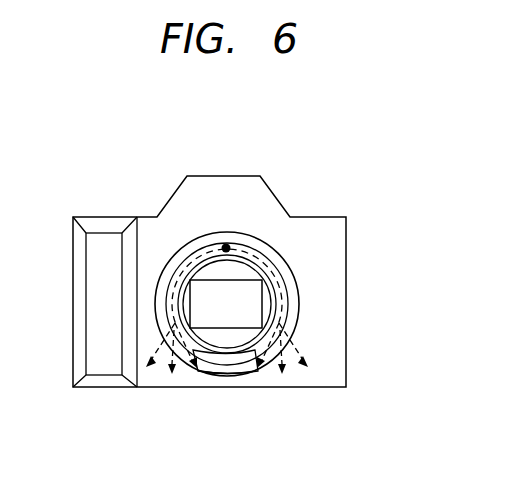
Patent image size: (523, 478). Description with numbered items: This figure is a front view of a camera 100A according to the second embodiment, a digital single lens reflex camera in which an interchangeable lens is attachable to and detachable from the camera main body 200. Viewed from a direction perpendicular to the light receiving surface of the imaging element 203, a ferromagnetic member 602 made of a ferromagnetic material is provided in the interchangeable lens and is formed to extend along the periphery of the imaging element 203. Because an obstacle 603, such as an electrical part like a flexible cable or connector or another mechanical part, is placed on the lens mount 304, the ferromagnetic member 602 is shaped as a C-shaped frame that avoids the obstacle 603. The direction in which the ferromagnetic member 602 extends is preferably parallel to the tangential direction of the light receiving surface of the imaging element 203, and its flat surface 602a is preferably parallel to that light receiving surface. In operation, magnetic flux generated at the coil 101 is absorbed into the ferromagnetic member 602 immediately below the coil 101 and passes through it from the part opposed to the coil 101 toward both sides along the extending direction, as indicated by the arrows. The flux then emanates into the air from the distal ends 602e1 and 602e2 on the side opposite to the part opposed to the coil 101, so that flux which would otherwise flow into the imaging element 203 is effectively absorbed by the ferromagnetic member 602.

The camera 100A is at (203, 141).
The coil 101 is at (225, 244).
The camera main body 200 is at (280, 205).
The imaging element 203 is at (205, 312).
The ferromagnetic member 602 is at (283, 266).
The flat surface 602a is at (188, 260).
The distal end 602e1 is at (168, 330).
The distal end 602e2 is at (283, 333).
The obstacle 603 is at (222, 362).
The lens mount 304 is at (235, 372).